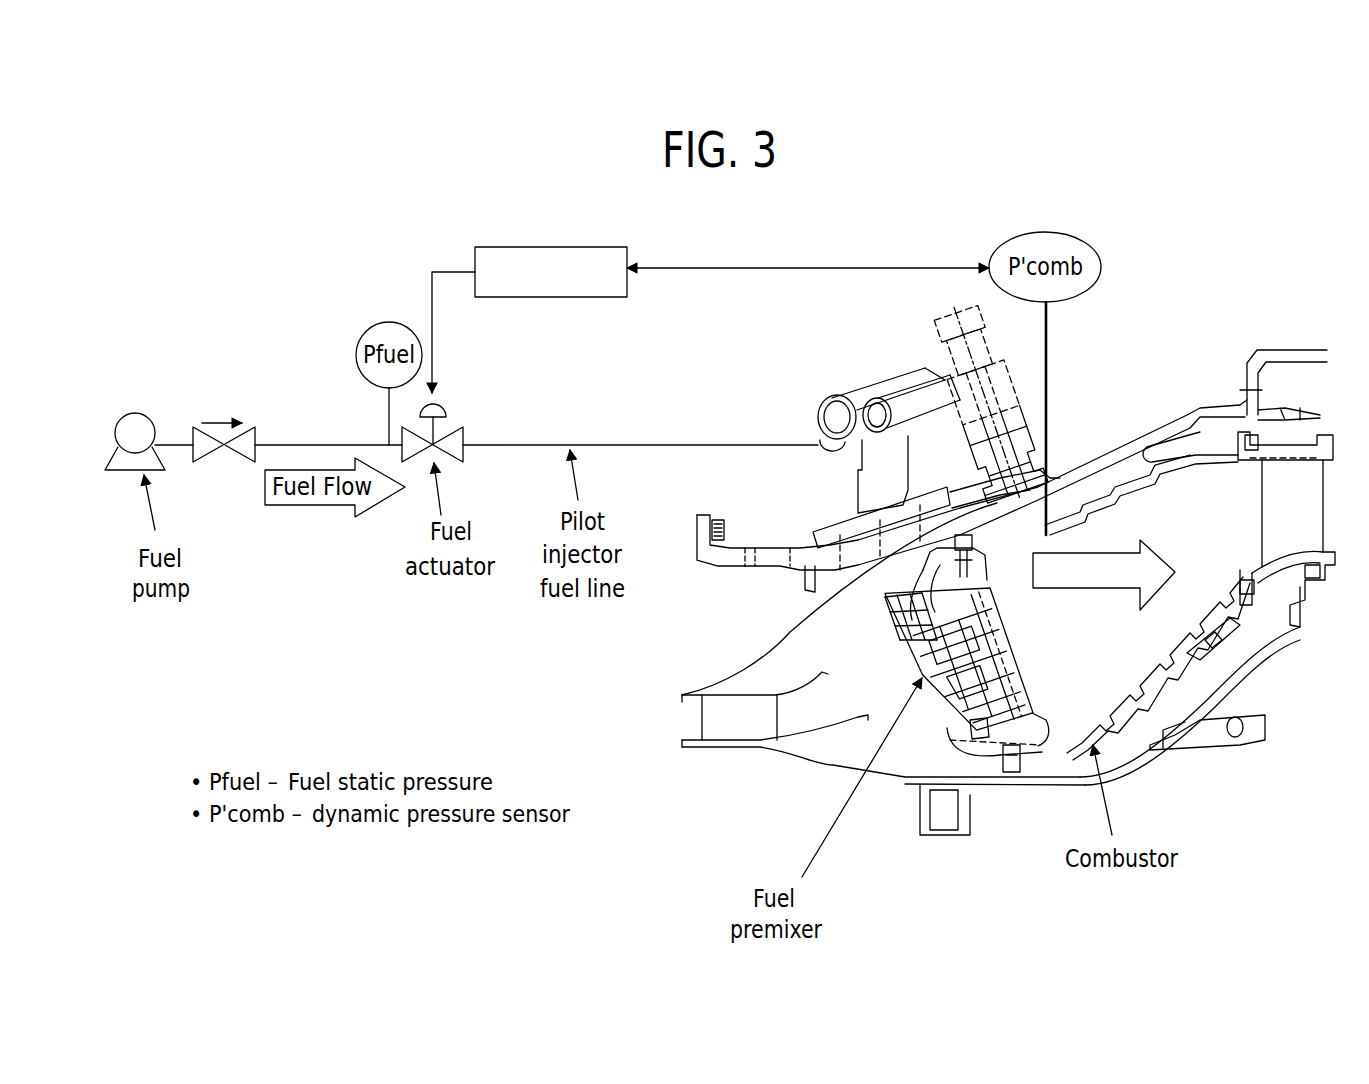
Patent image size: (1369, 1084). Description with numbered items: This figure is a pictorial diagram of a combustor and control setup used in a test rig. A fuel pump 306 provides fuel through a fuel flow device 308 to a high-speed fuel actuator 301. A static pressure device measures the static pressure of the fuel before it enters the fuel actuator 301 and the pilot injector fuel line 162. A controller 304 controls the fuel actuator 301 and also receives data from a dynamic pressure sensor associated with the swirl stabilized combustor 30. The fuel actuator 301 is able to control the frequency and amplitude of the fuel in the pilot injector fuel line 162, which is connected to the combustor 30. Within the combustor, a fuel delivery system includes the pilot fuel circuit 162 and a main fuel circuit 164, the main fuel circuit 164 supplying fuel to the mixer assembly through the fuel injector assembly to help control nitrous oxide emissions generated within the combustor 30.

The combustor 30 is at (1210, 312).
The pilot injector fuel line 162 is at (738, 443).
The main fuel circuit 164 is at (897, 375).
The fuel actuator 301 is at (462, 427).
The controller 304 is at (593, 247).
The fuel pump 306 is at (140, 411).
The fuel flow device 308 is at (247, 427).